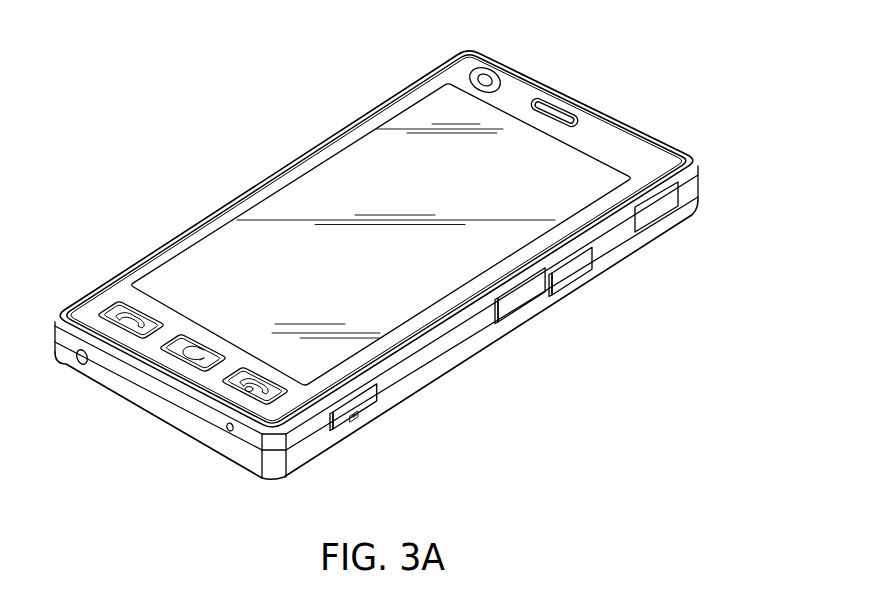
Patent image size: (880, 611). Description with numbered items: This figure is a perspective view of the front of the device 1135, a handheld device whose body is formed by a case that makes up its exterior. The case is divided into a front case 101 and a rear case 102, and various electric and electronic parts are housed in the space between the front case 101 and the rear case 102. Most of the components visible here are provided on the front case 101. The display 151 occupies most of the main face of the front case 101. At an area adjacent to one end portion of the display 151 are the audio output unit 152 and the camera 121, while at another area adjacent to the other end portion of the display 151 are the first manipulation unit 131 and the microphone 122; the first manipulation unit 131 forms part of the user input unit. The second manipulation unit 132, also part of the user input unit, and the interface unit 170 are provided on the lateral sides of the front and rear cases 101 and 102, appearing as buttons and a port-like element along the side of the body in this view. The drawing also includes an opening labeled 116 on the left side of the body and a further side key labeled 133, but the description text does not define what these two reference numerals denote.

The device 1135 is at (274, 76).
The front case 101 is at (693, 174).
The rear case 102 is at (692, 199).
The display 151 is at (312, 185).
The camera 121 is at (490, 81).
The audio output unit 152 is at (560, 116).
The first manipulation unit 131 is at (105, 312).
The interface (earphone jack) 116 is at (79, 362).
The microphone 122 is at (228, 431).
The manipulating unit (side key) 133 is at (370, 404).
The second manipulation unit 132 is at (530, 302).
The interface unit 170 is at (657, 215).